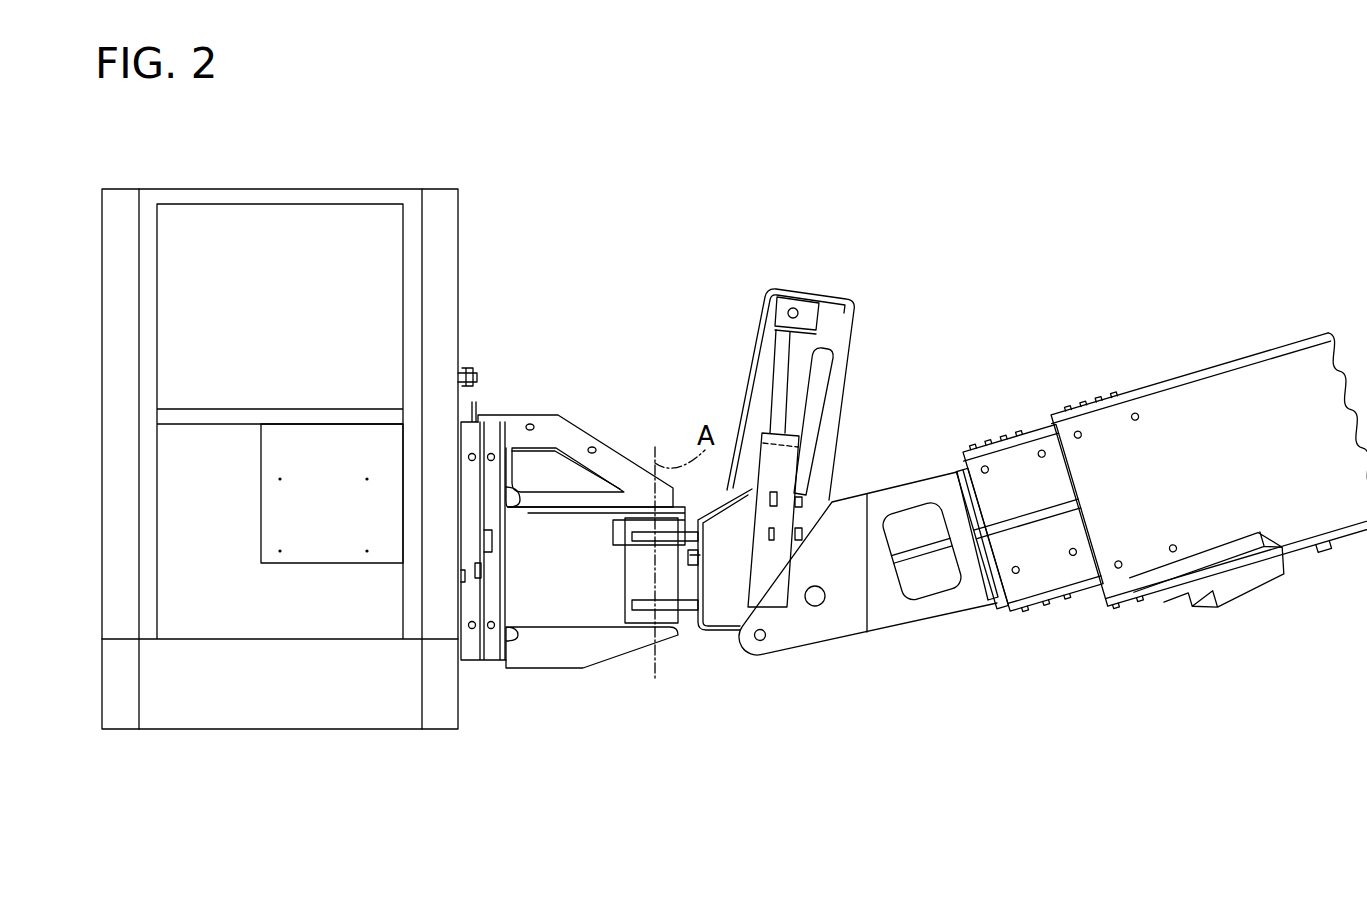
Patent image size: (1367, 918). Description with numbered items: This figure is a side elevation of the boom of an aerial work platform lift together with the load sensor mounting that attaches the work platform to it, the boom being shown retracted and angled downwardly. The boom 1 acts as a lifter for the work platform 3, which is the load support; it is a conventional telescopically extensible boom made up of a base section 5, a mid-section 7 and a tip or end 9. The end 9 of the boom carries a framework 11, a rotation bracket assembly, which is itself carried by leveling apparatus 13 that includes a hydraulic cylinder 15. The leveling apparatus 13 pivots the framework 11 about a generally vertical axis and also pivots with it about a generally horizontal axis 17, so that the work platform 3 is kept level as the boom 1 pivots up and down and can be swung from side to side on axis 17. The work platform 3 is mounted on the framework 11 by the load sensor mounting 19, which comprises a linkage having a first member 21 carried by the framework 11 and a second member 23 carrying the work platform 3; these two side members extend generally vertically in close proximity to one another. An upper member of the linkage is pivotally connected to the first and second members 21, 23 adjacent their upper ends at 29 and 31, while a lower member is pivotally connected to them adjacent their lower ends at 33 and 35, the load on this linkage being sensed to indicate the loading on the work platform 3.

The boom 1 is at (1185, 370).
The work platform 3 is at (100, 186).
The base section 5 is at (1190, 598).
The mid-section 7 is at (1030, 610).
The tip or end 9 is at (932, 618).
The framework 11 is at (562, 412).
The leveling apparatus 13 is at (850, 344).
The hydraulic cylinder 15 is at (800, 437).
The horizontal axis 17 is at (816, 606).
The load sensor mounting 19 is at (487, 674).
The first member 21 is at (487, 567).
The second member 23 is at (467, 575).
The pivotal connection 29 is at (468, 448).
The pivotal connection 31 is at (492, 447).
The pivotal connection 33 is at (463, 631).
The pivotal connection 35 is at (499, 617).